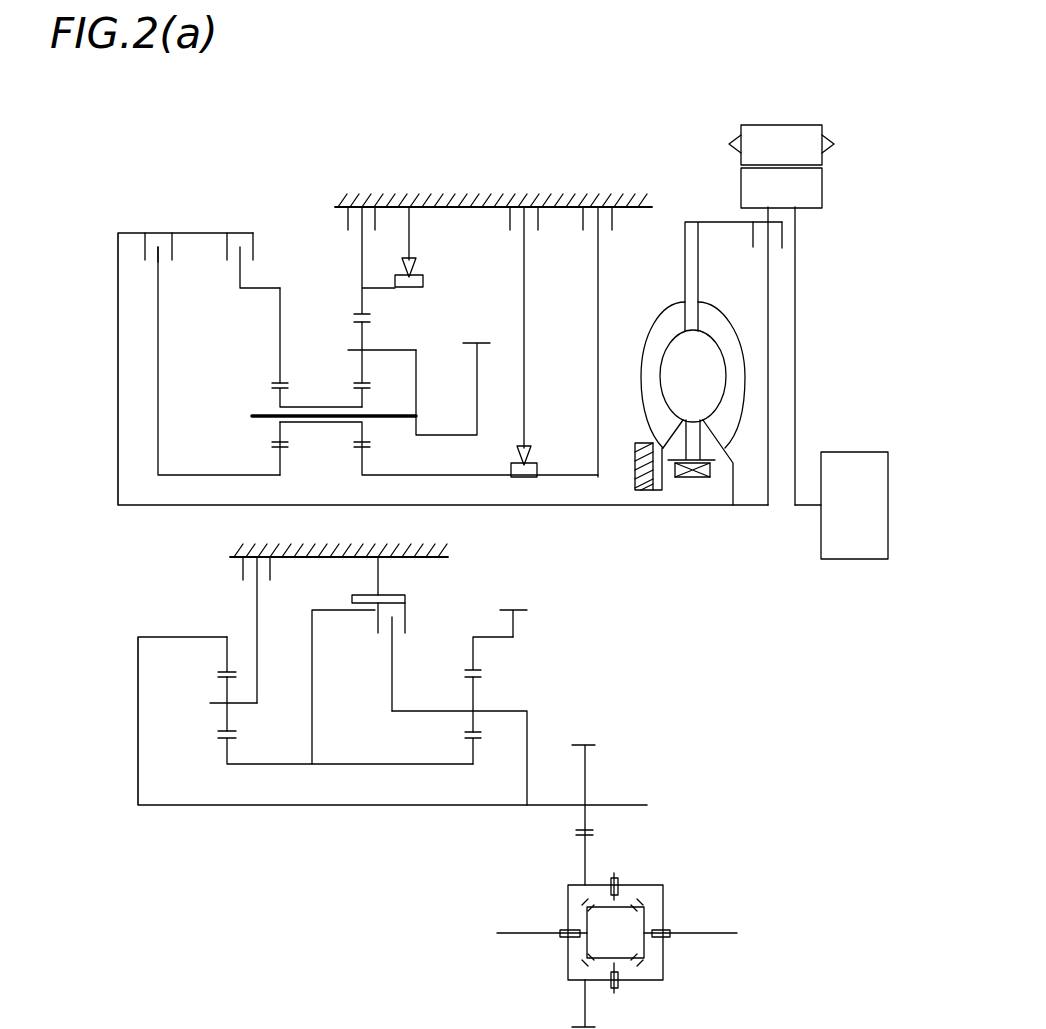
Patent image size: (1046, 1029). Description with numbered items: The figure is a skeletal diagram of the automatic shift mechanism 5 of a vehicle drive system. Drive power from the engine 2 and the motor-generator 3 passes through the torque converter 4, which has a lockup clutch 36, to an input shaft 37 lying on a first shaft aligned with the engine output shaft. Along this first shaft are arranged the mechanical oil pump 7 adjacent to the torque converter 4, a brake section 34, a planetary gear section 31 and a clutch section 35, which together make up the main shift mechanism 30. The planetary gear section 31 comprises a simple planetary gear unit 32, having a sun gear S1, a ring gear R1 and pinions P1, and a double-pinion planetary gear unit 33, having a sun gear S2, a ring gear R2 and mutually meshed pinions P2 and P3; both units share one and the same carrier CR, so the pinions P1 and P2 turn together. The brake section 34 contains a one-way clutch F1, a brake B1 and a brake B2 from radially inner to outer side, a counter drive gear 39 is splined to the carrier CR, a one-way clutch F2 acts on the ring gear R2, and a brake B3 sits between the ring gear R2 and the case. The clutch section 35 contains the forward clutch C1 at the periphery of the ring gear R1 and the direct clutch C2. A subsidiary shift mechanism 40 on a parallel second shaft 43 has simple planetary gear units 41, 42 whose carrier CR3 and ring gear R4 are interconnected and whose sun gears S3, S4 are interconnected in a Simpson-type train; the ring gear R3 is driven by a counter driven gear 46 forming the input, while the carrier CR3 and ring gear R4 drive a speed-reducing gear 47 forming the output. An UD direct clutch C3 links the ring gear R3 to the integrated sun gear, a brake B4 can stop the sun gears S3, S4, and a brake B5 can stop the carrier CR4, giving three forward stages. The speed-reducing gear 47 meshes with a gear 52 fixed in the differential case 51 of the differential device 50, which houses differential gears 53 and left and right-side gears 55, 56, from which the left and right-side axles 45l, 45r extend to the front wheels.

The engine 2 is at (855, 452).
The motor-generator 3 is at (820, 124).
The torque converter 4 is at (698, 329).
The automatic shift mechanism 5 is at (460, 112).
The mechanical oil pump 7 is at (640, 443).
The main shift mechanism 30 is at (103, 322).
The planetary gear section 31 is at (399, 315).
The simple planetary gear unit 32 is at (281, 303).
The double-pinion planetary gear unit 33 is at (423, 300).
The brake section 34 is at (492, 282).
The clutch section 35 is at (181, 212).
The lockup clutch 36 is at (753, 270).
The input shaft 37 is at (552, 505).
The counter drive gear 39 is at (466, 359).
The subsidiary shift mechanism 40 is at (112, 700).
The simple planetary gear unit 41 is at (456, 658).
The simple planetary gear unit 42 is at (293, 650).
The second shaft 43 is at (405, 806).
The left-side axle 45l is at (535, 935).
The right-side axle 45r is at (700, 935).
The counter driven gear 46 is at (520, 610).
The speed-reducing gear 47 is at (588, 754).
The differential device 50 is at (628, 916).
The differential case 51 is at (650, 983).
The gear 52 is at (588, 848).
The differential gears 53 is at (625, 960).
The left-side gear 55 is at (575, 922).
The right-side gear 56 is at (645, 917).
The forward clutch C1 is at (253, 245).
The direct clutch C2 is at (158, 232).
The UD direct clutch C3 is at (358, 683).
The brake B1 is at (610, 319).
The brake B2 is at (536, 195).
The brake B3 is at (362, 195).
The brake B4 is at (378, 557).
The brake B5 is at (339, 607).
The one-way clutch F1 is at (534, 342).
The one-way clutch F2 is at (409, 224).
The pinions P1 is at (276, 398).
The pinions P2 is at (358, 395).
The pinions P3 is at (358, 322).
The ring gear R1 is at (276, 382).
The ring gear R2 is at (370, 316).
The ring gear R3 is at (472, 650).
The ring gear R4 is at (224, 672).
The sun gear S1 is at (276, 452).
The sun gear S2 is at (370, 450).
The sun gear S3 is at (478, 740).
The sun gear S4 is at (228, 756).
The carrier CR is at (418, 374).
The carrier CR3 is at (528, 732).
The carrier CR4 is at (222, 706).